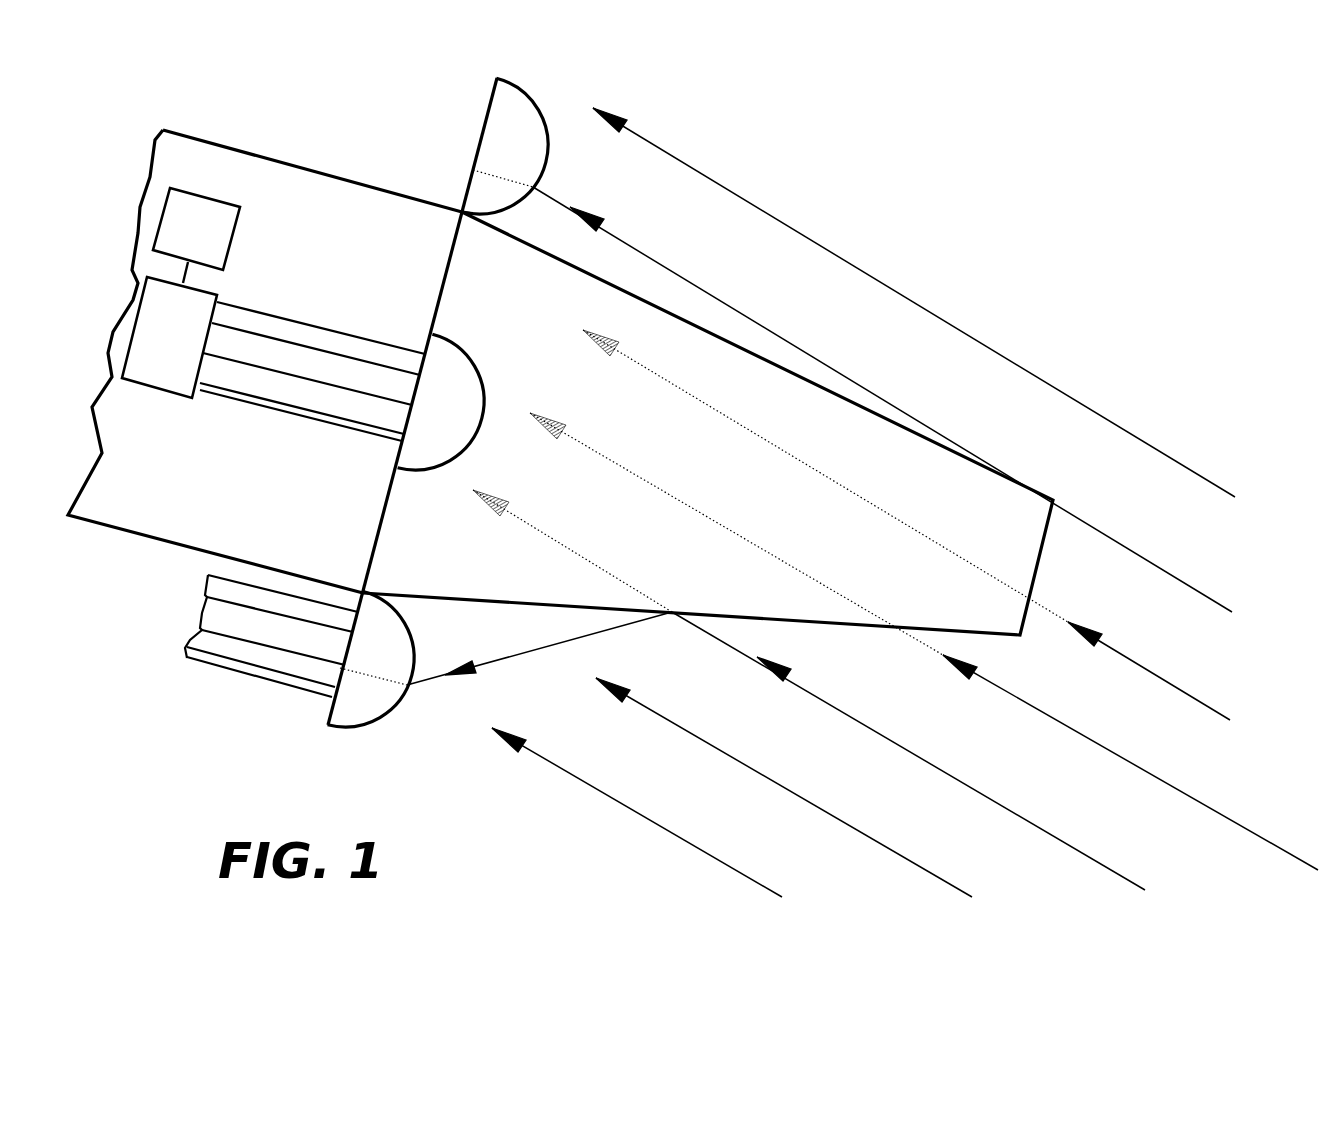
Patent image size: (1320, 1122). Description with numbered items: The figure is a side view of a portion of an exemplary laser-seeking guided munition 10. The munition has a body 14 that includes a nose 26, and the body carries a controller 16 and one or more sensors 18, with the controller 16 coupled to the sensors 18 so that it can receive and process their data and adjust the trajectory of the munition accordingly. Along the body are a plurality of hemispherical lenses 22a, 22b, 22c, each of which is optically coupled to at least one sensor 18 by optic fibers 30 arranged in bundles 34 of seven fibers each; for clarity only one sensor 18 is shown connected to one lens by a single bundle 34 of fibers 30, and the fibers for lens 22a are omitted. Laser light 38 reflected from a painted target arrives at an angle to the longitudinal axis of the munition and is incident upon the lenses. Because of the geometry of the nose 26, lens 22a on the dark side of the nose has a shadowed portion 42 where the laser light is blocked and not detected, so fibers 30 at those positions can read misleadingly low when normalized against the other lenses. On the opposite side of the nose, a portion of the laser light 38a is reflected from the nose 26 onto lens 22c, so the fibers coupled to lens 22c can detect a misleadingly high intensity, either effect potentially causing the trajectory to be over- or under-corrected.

The guided munition 10 is at (980, 162).
The body 14 is at (150, 536).
The controller 16 is at (220, 233).
The sensor 18 is at (153, 380).
The lens 22a is at (548, 150).
The lens 22b is at (473, 435).
The lens 22c is at (372, 722).
The nose 26 is at (1042, 562).
The optic fibers 30 is at (320, 403).
The bundle 34 is at (294, 302).
The laser light 38 is at (1047, 382).
The reflected laser light 38a is at (500, 663).
The shadowed portion 42 is at (462, 208).